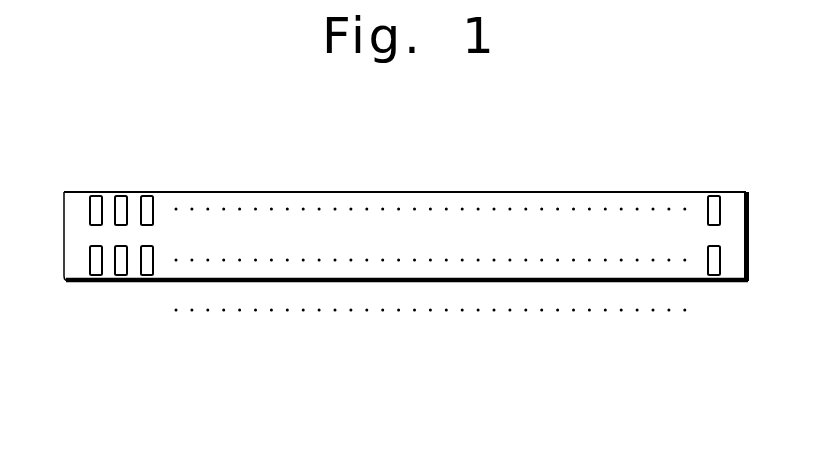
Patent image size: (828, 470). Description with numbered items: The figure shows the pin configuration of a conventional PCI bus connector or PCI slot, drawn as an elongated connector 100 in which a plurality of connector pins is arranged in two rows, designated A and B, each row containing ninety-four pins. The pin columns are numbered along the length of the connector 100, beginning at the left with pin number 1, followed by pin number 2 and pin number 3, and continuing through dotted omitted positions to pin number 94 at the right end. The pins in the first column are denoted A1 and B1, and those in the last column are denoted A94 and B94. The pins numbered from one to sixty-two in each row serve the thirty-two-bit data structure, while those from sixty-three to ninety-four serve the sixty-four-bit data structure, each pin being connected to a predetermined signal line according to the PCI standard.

The connector 100 is at (281, 192).
The pin number 1 is at (94, 261).
The pin number 2 is at (120, 261).
The pin number 3 is at (146, 261).
The pin number 94 is at (714, 261).